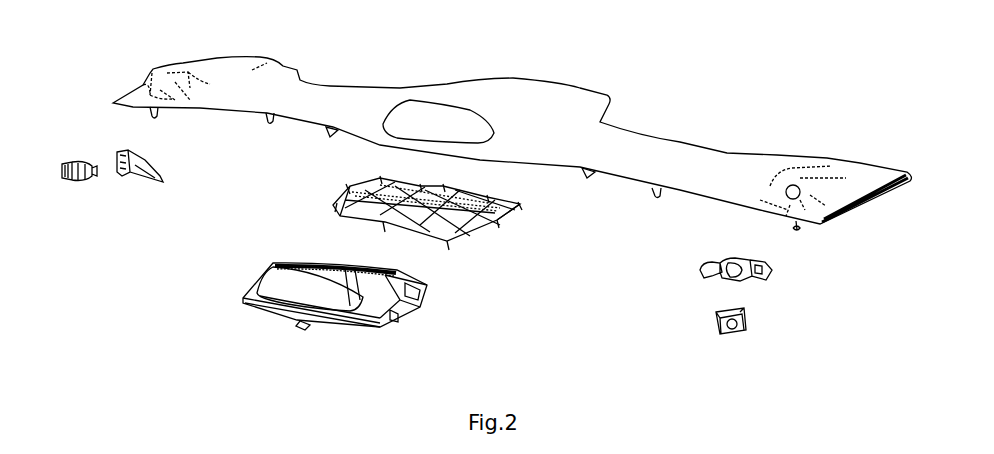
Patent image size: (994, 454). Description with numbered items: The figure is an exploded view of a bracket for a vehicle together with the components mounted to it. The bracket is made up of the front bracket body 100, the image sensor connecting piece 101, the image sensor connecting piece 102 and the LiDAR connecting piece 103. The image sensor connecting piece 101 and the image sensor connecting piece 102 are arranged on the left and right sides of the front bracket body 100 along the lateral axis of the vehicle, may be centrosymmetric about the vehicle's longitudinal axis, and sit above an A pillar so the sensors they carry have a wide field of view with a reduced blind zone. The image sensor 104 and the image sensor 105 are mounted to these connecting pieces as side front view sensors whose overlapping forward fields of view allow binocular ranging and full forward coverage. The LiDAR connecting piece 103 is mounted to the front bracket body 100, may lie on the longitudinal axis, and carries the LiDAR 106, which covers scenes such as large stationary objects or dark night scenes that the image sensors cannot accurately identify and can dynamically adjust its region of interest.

The front bracket body 100 is at (245, 80).
The image sensor connecting piece 101 is at (120, 152).
The image sensor connecting piece 102 is at (703, 270).
The LiDAR connecting piece 103 is at (348, 192).
The image sensor 104 is at (75, 160).
The image sensor 105 is at (714, 320).
The LiDAR 106 is at (292, 256).